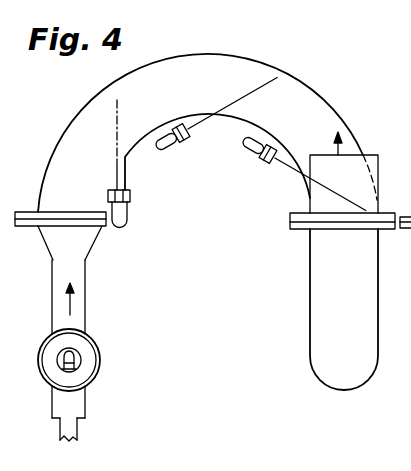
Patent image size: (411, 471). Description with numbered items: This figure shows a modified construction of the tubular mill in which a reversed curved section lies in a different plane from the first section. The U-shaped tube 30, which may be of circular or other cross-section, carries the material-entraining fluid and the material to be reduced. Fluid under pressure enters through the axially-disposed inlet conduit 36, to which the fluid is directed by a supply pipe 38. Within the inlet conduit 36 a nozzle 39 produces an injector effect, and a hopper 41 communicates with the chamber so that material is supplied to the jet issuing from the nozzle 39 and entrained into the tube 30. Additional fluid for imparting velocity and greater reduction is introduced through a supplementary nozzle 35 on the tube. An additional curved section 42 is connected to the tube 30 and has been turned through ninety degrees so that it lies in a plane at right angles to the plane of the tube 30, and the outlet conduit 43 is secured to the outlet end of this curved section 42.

The U-shaped tube 30 is at (285, 97).
The supplementary nozzle 35 is at (281, 164).
The inlet conduit 36 is at (82, 281).
The supply pipe 38 is at (78, 428).
The nozzle 39 is at (80, 357).
The hopper 41 is at (92, 362).
The curved section 42 is at (316, 290).
The outlet conduit 43 is at (358, 180).